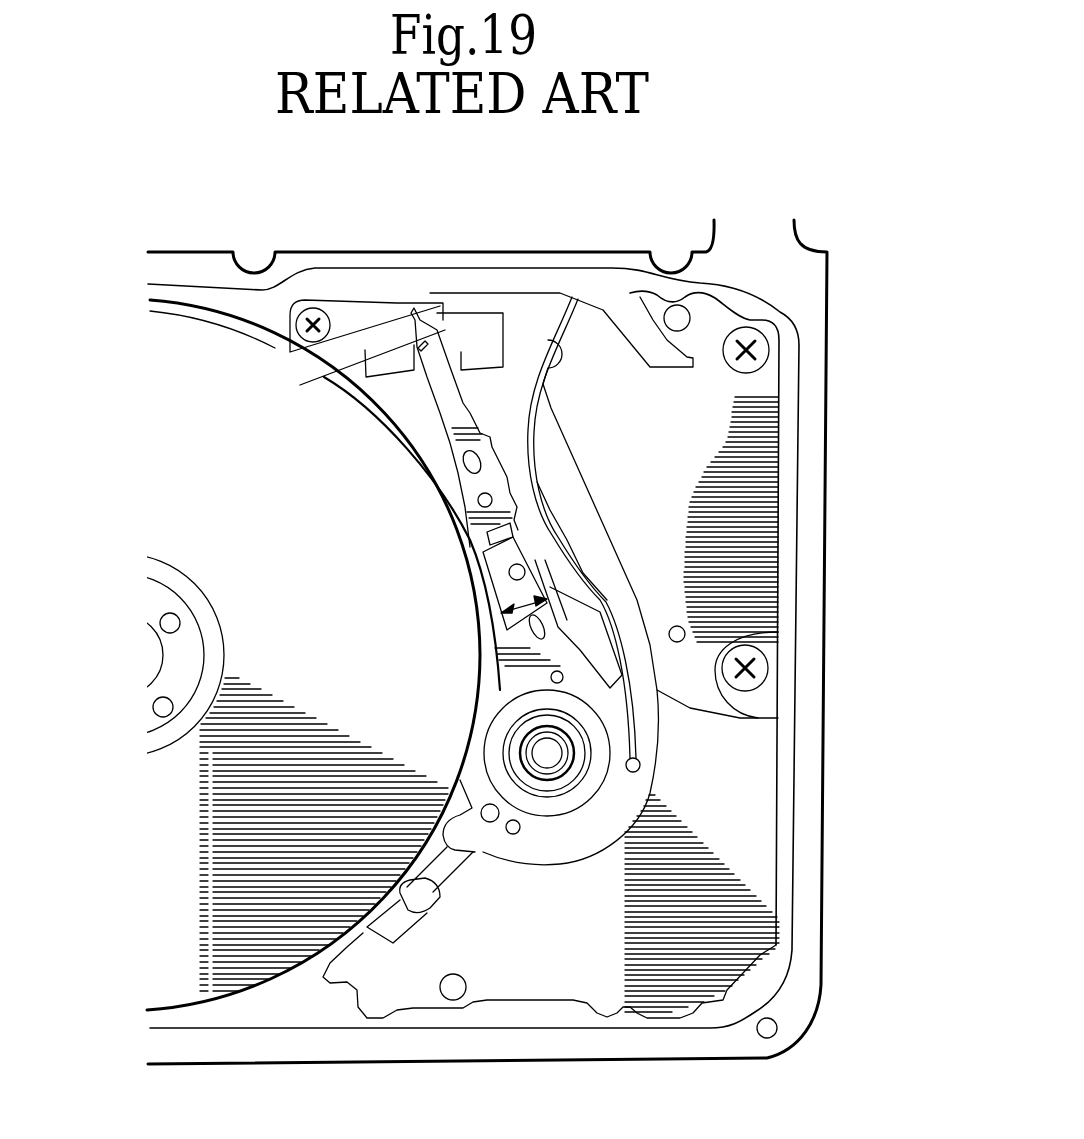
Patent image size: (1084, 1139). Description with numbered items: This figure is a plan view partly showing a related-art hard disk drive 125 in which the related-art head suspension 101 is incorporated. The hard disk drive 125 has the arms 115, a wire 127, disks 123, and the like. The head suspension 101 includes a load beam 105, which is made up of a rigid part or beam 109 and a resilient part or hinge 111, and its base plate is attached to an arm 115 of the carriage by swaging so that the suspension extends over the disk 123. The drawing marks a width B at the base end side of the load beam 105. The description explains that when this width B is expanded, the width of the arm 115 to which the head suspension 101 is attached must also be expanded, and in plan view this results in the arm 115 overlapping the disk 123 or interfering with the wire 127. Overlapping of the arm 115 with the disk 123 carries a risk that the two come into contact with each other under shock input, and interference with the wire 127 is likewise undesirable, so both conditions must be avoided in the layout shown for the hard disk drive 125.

The hard disk drive 125 is at (600, 248).
The disk 123 is at (282, 868).
The rigid part 109 is at (444, 408).
The load beam 105 is at (452, 420).
The head suspension 101 is at (483, 471).
The resilient part 111 is at (483, 553).
The wire 127 is at (540, 482).
The arm 115 is at (523, 597).
The width of the base end side of the load beam B is at (542, 617).